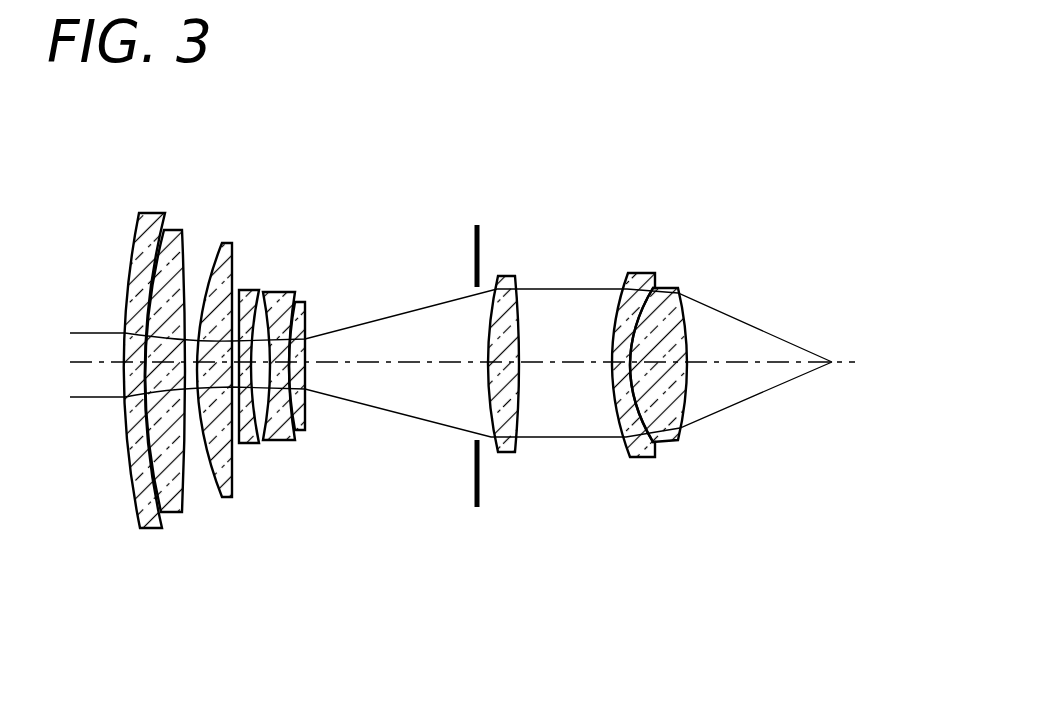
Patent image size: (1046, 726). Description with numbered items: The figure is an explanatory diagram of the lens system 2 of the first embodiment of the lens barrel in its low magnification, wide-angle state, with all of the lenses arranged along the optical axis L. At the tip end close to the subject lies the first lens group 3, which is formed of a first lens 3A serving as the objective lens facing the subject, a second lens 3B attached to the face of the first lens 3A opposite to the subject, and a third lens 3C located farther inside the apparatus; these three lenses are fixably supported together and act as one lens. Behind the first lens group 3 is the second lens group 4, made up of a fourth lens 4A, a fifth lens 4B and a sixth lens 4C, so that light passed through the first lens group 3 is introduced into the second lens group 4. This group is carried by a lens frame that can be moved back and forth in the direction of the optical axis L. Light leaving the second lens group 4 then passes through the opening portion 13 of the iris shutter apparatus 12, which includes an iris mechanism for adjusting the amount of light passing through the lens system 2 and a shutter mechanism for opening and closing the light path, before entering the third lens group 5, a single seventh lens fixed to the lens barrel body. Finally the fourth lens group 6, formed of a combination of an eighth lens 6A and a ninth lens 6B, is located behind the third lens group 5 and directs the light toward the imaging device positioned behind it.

The lens system 2 is at (431, 279).
The optical axis L is at (381, 357).
The first lens group 3 is at (238, 213).
The first lens 3A is at (142, 530).
The second lens 3B is at (170, 514).
The third lens 3C is at (227, 499).
The second lens group 4 is at (310, 278).
The fourth lens 4A is at (247, 446).
The fifth lens 4B is at (273, 441).
The sixth lens 4C is at (303, 432).
The third lens group 5 is at (525, 272).
The fourth lens group 6 is at (682, 270).
The eighth lens 6A is at (645, 458).
The ninth lens 6B is at (668, 445).
The iris shutter apparatus 12 is at (477, 507).
The opening portion 13 is at (473, 437).